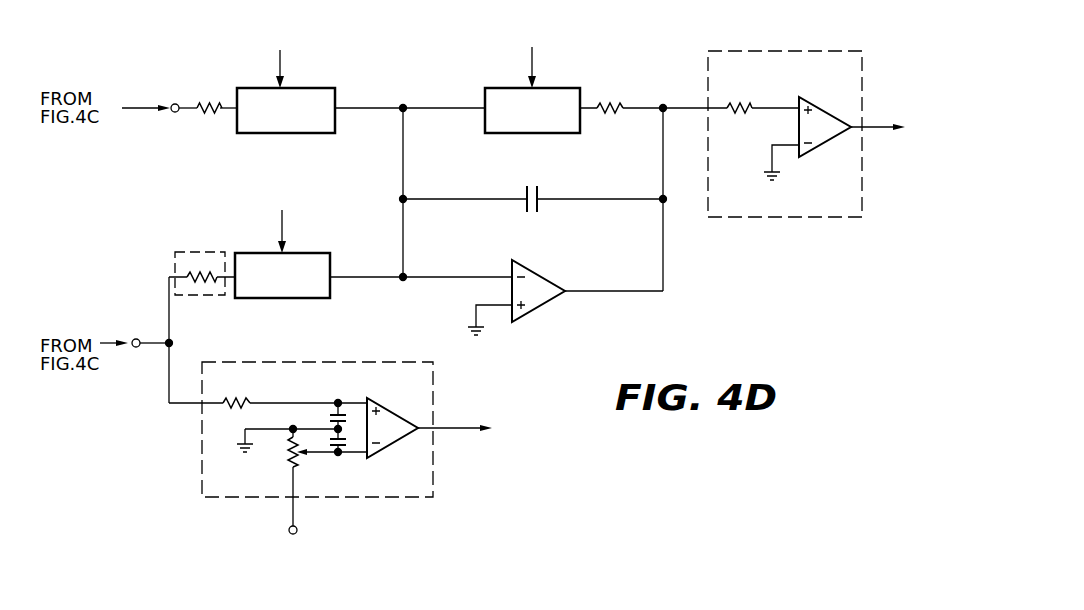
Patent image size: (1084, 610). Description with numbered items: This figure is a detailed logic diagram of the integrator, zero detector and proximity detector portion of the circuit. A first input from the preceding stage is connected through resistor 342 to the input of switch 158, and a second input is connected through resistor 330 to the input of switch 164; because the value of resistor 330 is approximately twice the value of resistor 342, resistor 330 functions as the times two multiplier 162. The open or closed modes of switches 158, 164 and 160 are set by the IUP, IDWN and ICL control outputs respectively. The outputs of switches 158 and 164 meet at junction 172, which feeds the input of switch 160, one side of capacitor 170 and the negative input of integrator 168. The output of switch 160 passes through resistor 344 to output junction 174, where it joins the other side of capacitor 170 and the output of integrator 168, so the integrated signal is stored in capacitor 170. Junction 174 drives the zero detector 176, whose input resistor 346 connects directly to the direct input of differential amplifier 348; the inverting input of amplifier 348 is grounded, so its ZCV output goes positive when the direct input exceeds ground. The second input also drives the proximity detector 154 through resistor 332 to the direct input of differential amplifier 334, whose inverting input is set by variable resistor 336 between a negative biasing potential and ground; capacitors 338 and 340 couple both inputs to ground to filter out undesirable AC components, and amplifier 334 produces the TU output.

The proximity detector 154 is at (433, 387).
The switch 158 is at (312, 88).
The switch 160 is at (485, 120).
The times two multiplier 162 is at (203, 252).
The switch 164 is at (312, 253).
The integrator 168 is at (542, 273).
The capacitor 170 is at (540, 196).
The junction 172 is at (403, 108).
The output junction 174 is at (663, 108).
The zero detector 176 is at (757, 217).
The resistor 330 is at (198, 273).
The resistor 332 is at (230, 402).
The differential amplifier 334 is at (393, 412).
The variable resistor 336 is at (288, 450).
The capacitor 338 is at (335, 414).
The capacitor 340 is at (342, 455).
The resistor 342 is at (207, 106).
The resistor 344 is at (610, 105).
The resistor 346 is at (740, 106).
The differential amplifier 348 is at (822, 98).